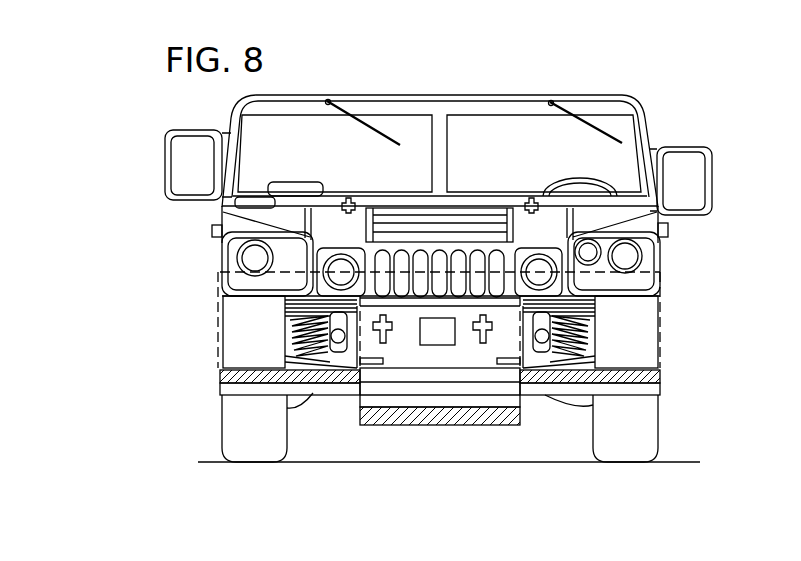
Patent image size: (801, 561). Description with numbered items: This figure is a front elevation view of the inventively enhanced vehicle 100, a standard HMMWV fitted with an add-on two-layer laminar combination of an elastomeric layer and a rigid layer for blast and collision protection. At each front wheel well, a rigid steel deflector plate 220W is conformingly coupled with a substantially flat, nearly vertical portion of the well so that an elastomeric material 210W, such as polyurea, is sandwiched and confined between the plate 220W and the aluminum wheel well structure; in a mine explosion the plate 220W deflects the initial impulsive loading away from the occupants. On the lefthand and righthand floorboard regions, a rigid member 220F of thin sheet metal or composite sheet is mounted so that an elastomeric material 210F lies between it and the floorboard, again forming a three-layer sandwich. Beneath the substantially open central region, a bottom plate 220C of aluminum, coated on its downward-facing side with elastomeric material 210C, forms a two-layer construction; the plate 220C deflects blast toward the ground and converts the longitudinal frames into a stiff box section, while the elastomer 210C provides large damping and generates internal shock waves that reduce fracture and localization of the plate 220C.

The explosion/collision-protective HMMWV 100 is at (704, 113).
The elastomeric material 210W is at (640, 337).
The rigid member (steel deflector plate) 220W is at (442, 320).
The elastomeric material 210F is at (563, 382).
The rigid member (thin sheet metal or composite sheet) 220F is at (640, 395).
The elastomeric material (ERC coating) 210C is at (397, 425).
The bottom plate 220C is at (480, 410).